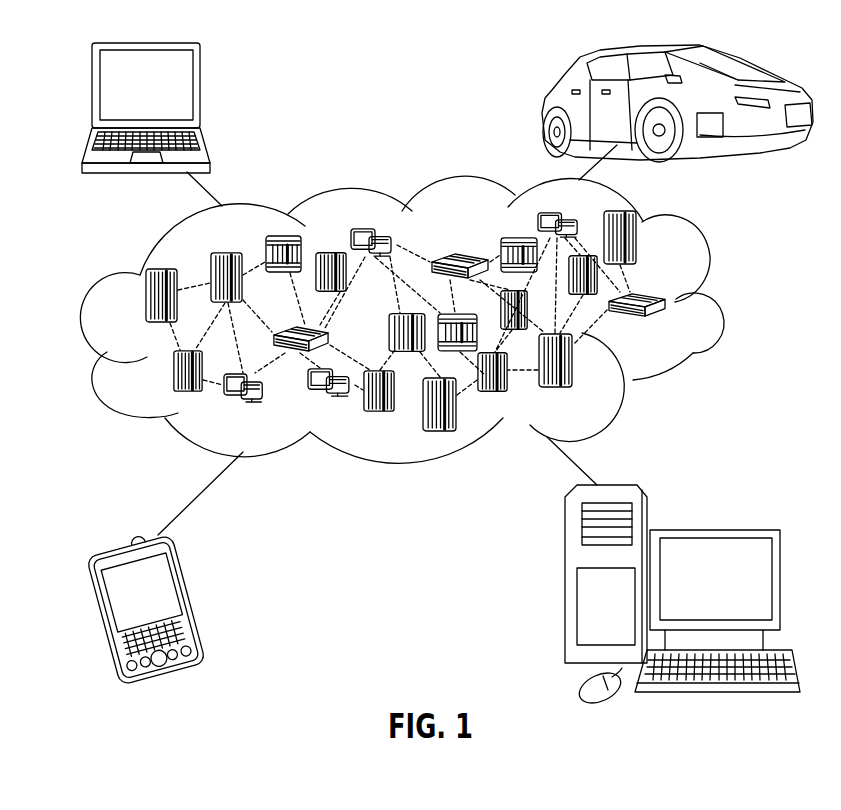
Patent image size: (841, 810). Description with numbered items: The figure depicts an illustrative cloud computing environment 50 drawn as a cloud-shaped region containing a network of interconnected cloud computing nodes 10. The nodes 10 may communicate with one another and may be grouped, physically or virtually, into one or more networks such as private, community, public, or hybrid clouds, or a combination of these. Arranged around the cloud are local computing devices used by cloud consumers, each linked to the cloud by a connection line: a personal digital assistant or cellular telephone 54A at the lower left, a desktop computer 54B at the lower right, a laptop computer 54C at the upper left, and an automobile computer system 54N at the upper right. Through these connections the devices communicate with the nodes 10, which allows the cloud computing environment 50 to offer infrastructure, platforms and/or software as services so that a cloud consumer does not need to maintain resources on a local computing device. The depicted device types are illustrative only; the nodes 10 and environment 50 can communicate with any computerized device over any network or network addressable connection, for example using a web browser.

The cloud computing node 10 is at (670, 331).
The cloud computing environment 50 is at (710, 303).
The cellular telephone 54A is at (188, 605).
The desktop computer 54B is at (713, 529).
The laptop computer 54C is at (201, 92).
The automobile computer system 54N is at (542, 104).